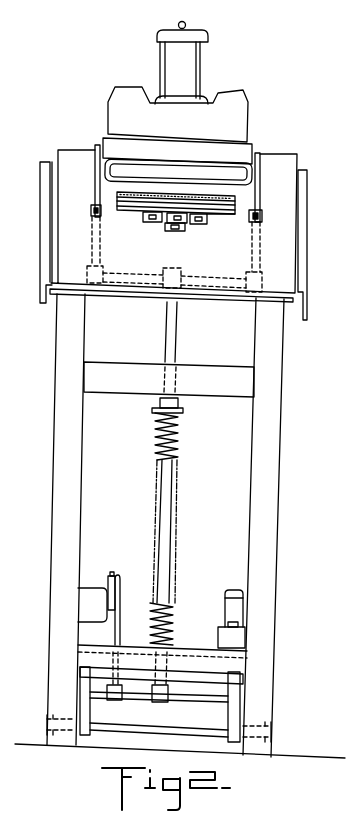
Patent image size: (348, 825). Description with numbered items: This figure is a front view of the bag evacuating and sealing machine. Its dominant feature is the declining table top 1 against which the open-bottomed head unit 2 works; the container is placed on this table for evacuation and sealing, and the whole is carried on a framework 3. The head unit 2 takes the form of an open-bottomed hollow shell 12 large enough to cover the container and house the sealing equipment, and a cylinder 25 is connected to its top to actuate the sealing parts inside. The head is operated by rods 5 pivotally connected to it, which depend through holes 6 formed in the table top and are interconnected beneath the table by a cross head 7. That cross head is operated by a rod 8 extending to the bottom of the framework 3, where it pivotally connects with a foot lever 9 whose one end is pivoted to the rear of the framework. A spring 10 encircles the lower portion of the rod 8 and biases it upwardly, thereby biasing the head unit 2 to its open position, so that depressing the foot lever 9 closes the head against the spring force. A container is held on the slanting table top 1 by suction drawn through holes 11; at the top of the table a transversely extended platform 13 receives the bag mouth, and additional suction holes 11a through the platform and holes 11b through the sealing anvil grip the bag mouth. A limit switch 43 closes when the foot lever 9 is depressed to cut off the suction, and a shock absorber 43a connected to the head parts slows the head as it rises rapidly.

The table top 1 is at (282, 260).
The head unit 2 is at (236, 106).
The framework 3 is at (272, 418).
The rods 5 is at (95, 186).
The holes 6 is at (91, 210).
The cross head 7 is at (139, 284).
The rod 8 is at (173, 341).
The foot lever 9 is at (205, 678).
The spring 10 is at (176, 435).
The holes 11 is at (168, 229).
The holes 11a is at (143, 206).
The holes 11b is at (204, 195).
The hollow shell 12 is at (240, 154).
The platform 13 is at (220, 210).
The cylinder 25 is at (190, 66).
The limit switch 43 is at (236, 637).
The shock absorber 43a is at (90, 594).